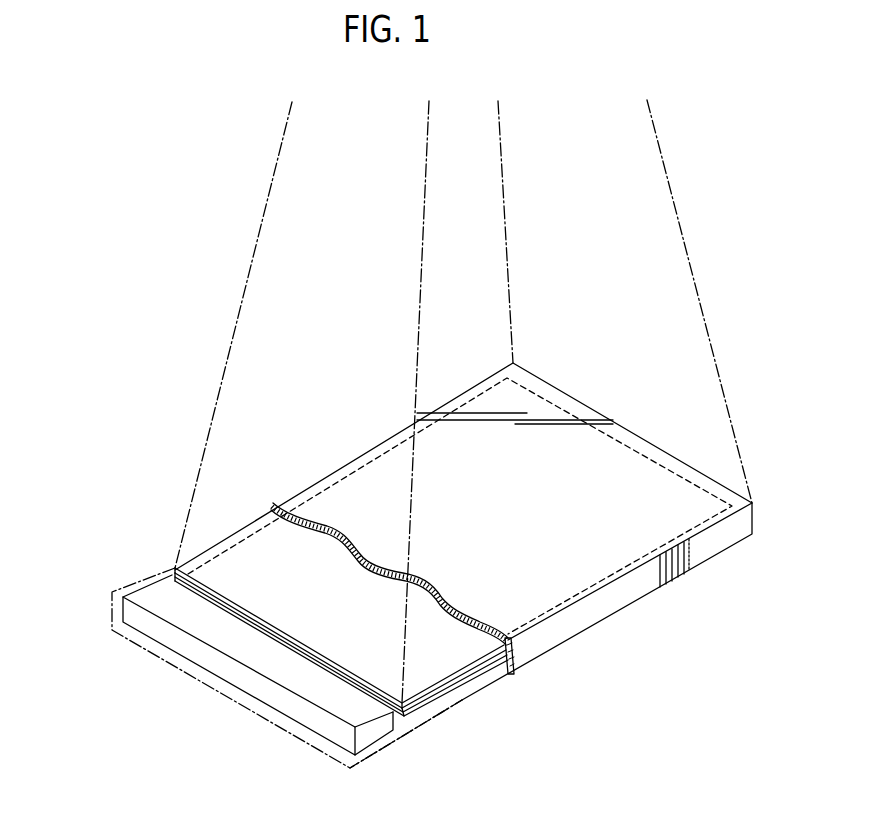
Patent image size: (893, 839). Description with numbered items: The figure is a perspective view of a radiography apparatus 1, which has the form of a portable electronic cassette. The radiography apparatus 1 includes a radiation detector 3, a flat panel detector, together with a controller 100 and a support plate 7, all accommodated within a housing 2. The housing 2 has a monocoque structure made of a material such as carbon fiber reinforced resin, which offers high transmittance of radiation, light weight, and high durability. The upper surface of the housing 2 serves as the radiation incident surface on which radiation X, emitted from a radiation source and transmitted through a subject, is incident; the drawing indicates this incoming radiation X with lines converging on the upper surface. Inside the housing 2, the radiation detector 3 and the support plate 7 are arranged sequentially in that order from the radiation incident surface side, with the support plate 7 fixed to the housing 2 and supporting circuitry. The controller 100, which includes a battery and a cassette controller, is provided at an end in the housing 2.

The X-rays (radiation) X is at (243, 302).
The radiography apparatus 1 is at (463, 565).
The housing 2 is at (597, 615).
The radiation detector 3 is at (490, 670).
The support plate 7 is at (452, 690).
The controller 100 is at (188, 618).